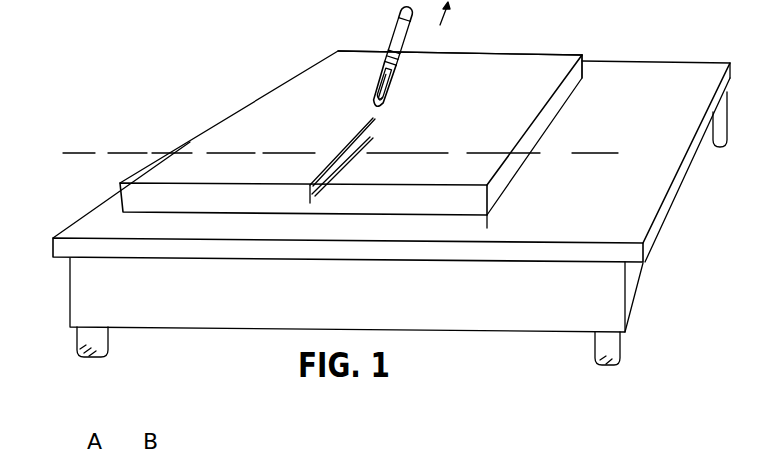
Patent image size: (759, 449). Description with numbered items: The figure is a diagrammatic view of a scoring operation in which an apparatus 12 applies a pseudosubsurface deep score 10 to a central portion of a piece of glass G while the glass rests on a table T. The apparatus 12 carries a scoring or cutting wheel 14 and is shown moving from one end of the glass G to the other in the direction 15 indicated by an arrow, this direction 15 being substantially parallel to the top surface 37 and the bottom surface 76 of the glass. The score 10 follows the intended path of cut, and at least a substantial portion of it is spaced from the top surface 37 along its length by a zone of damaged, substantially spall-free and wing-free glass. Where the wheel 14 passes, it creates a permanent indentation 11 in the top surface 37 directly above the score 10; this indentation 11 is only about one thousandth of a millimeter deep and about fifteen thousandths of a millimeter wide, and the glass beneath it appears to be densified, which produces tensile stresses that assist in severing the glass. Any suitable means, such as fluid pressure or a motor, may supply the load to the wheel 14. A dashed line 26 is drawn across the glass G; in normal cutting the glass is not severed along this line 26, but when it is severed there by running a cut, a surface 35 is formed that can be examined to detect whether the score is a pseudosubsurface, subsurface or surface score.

The pseudosubsurface deep score 10 is at (303, 196).
The permanent indentation 11 is at (310, 180).
The apparatus 12 is at (394, 32).
The scoring or cutting wheel 14 is at (372, 96).
The direction 15 is at (440, 25).
The dashed line 26 is at (146, 150).
The top surface 37 is at (530, 104).
The bottom surface 76 is at (483, 226).
The surface 35 is at (746, 390).
The piece of glass G is at (553, 54).
The table T is at (677, 72).